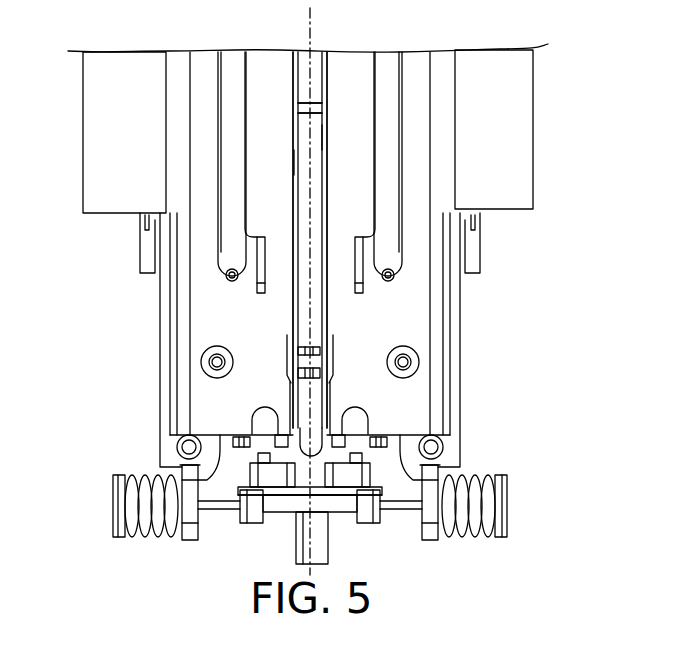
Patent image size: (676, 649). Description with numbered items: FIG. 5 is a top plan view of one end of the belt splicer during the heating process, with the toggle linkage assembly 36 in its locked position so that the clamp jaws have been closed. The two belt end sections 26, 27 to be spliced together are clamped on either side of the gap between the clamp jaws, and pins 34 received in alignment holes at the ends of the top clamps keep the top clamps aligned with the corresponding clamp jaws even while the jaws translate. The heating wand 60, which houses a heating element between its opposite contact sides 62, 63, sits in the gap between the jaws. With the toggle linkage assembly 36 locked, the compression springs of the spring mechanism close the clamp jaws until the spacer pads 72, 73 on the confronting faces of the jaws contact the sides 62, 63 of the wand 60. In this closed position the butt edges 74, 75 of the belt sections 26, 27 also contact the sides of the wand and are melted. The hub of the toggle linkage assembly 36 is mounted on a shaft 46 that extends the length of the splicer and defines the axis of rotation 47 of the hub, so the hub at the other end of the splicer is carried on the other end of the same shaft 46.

The belt end section 26 is at (83, 137).
The belt end section 27 is at (533, 152).
The pin 34 is at (420, 358).
The toggle linkage assembly 36 is at (264, 531).
The shaft 46 is at (328, 546).
The axis of rotation 47 is at (310, 18).
The heating wand 60 is at (297, 62).
The contact side 62 is at (293, 318).
The contact side 63 is at (333, 313).
The spacer pad 72 is at (288, 381).
The spacer pad 73 is at (330, 345).
The butt edge 74 is at (293, 162).
The butt edge 75 is at (323, 138).